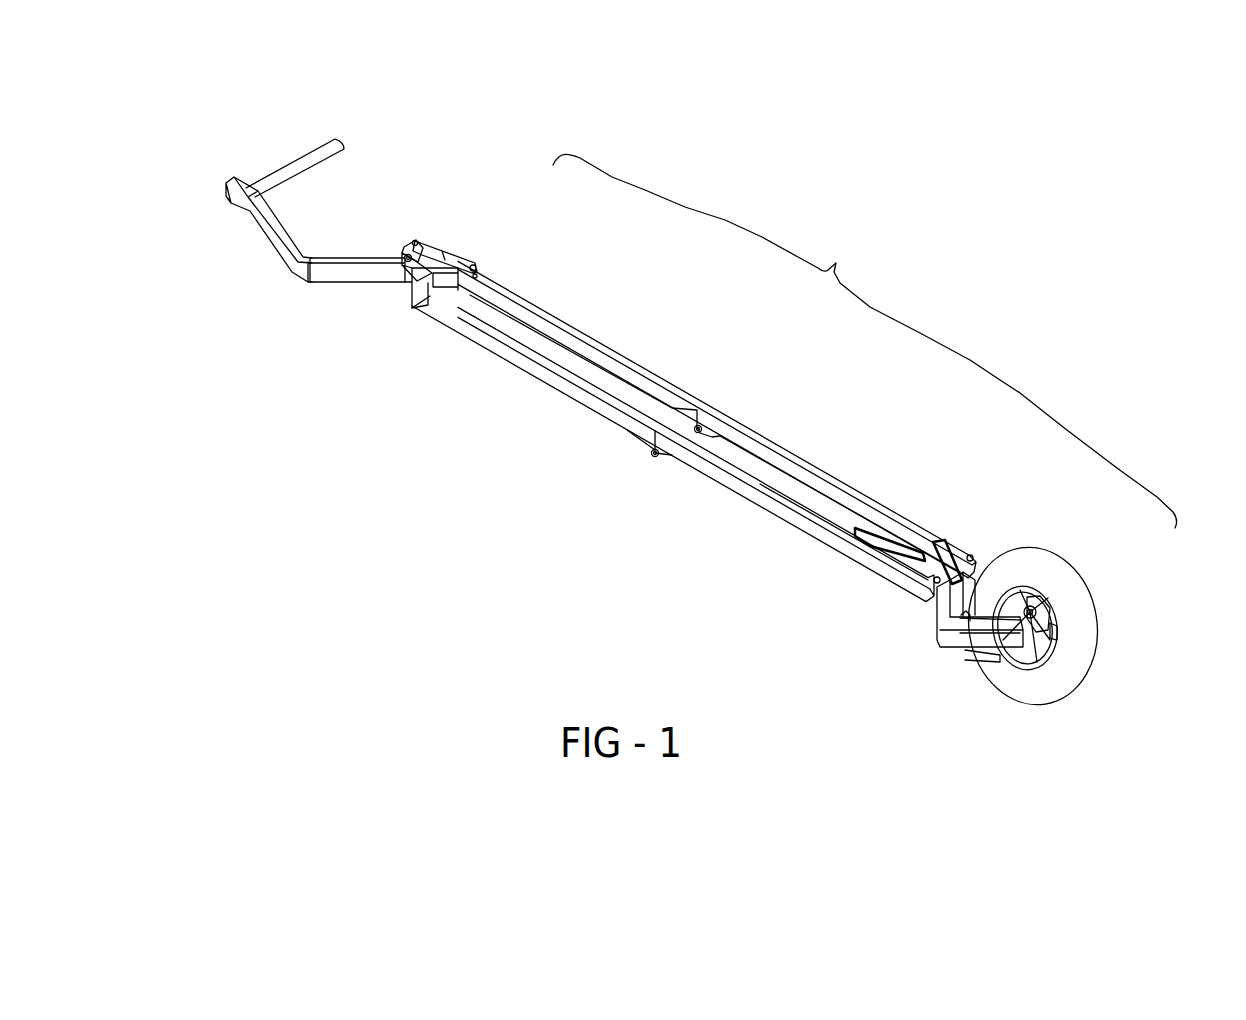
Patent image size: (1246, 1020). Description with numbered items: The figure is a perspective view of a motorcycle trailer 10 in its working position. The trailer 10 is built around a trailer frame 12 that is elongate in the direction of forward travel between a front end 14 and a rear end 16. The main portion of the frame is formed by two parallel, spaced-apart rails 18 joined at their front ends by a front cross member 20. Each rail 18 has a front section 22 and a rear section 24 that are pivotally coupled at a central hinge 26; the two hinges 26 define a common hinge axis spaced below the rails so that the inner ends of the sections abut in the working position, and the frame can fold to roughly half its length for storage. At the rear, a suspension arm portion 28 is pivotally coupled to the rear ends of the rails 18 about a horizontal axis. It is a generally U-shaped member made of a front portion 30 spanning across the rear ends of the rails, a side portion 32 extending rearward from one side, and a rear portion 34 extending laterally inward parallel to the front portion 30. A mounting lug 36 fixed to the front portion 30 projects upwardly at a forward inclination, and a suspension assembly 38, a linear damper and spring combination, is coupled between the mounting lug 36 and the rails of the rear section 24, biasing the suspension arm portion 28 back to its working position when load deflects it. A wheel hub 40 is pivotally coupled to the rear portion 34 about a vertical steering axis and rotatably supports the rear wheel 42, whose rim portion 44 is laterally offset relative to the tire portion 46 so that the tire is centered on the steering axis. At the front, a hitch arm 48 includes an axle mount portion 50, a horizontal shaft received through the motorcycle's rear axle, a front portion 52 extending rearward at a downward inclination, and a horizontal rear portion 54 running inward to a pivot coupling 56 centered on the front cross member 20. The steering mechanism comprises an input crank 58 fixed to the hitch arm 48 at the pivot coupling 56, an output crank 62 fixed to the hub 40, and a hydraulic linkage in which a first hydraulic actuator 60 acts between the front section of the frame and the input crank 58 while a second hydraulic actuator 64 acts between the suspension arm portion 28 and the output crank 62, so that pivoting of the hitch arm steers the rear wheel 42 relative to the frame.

The motorcycle trailer 10 is at (840, 207).
The trailer frame 12 is at (865, 341).
The front end 14 is at (228, 418).
The rear end 16 is at (831, 789).
The rails 18 is at (588, 346).
The front cross member 20 is at (447, 280).
The front section 22 is at (620, 414).
The rear section 24 is at (758, 483).
The central hinge 26 is at (703, 430).
The suspension arm portion 28 is at (935, 613).
The front portion 30 is at (963, 590).
The side portion 32 is at (943, 630).
The rear portion 34 is at (992, 655).
The mounting lug 36 is at (953, 550).
The suspension assembly 38 is at (895, 540).
The wheel hub 40 is at (1036, 635).
The rear wheel 42 is at (1110, 598).
The rim portion 44 is at (1047, 653).
The tire portion 46 is at (1100, 628).
The hitch arm 48 is at (261, 296).
The axle mount portion 50 is at (278, 168).
The front portion 52 is at (258, 227).
The rear portion 54 is at (331, 283).
The pivot coupling 56 is at (407, 276).
The input crank 58 is at (408, 250).
The first hydraulic actuator 60 is at (453, 256).
The output crank 62 is at (1025, 604).
The second hydraulic actuator 64 is at (955, 640).